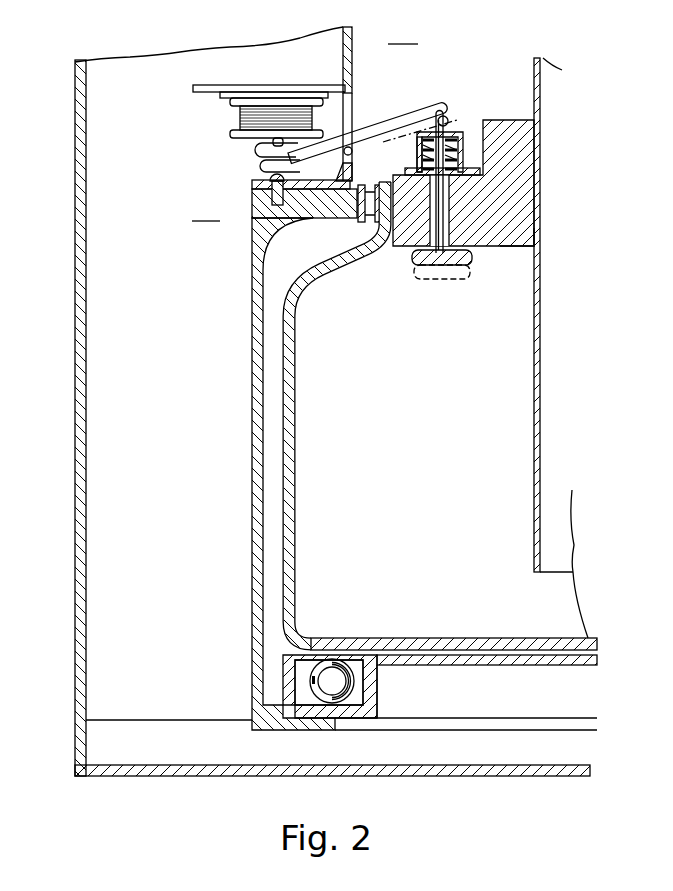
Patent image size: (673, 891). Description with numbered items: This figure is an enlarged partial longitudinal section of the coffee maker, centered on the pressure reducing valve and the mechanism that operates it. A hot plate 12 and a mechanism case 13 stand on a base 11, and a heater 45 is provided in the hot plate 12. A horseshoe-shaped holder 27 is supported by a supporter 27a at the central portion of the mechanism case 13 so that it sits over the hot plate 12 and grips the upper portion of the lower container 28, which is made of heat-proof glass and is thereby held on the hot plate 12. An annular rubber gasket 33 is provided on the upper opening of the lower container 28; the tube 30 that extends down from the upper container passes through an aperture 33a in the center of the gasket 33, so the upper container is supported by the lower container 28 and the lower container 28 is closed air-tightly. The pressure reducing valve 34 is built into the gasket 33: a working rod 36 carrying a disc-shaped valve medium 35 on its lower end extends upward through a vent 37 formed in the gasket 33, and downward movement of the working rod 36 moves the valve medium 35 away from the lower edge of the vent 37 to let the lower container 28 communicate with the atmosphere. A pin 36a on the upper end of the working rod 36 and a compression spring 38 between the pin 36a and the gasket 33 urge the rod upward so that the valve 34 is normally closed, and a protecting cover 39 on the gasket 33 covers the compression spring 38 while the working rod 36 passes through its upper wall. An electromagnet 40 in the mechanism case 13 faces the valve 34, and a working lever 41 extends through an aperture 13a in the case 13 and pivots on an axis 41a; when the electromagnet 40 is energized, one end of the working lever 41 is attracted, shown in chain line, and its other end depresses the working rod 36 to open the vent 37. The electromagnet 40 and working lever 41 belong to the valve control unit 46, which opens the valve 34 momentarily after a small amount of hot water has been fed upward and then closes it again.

The base 11 is at (76, 750).
The hot plate 12 is at (596, 646).
The mechanism case 13 is at (75, 296).
The aperture 13a is at (352, 110).
The horseshoe-shaped holder 27 is at (369, 216).
The supporter 27a is at (321, 218).
The lower container 28 is at (283, 440).
The tube 30 is at (533, 412).
The annular rubber gasket 33 is at (507, 120).
The aperture 33a is at (532, 247).
The pressure reducing valve 34 is at (403, 32).
The valve medium 35 is at (440, 262).
The working rod 36 is at (465, 148).
The pin 36a is at (417, 143).
The vent 37 is at (466, 256).
The compression spring 38 is at (463, 132).
The protecting cover 39 is at (447, 118).
The electromagnet 40 is at (240, 118).
The working lever 41 is at (422, 102).
The axis 41a is at (345, 156).
The heater 45 is at (362, 700).
The valve control unit 46 is at (230, 150).